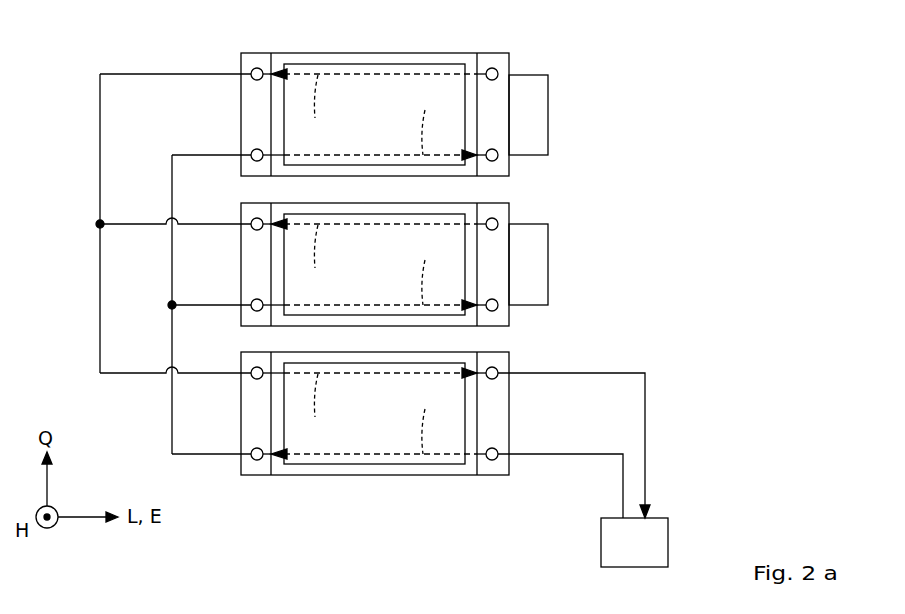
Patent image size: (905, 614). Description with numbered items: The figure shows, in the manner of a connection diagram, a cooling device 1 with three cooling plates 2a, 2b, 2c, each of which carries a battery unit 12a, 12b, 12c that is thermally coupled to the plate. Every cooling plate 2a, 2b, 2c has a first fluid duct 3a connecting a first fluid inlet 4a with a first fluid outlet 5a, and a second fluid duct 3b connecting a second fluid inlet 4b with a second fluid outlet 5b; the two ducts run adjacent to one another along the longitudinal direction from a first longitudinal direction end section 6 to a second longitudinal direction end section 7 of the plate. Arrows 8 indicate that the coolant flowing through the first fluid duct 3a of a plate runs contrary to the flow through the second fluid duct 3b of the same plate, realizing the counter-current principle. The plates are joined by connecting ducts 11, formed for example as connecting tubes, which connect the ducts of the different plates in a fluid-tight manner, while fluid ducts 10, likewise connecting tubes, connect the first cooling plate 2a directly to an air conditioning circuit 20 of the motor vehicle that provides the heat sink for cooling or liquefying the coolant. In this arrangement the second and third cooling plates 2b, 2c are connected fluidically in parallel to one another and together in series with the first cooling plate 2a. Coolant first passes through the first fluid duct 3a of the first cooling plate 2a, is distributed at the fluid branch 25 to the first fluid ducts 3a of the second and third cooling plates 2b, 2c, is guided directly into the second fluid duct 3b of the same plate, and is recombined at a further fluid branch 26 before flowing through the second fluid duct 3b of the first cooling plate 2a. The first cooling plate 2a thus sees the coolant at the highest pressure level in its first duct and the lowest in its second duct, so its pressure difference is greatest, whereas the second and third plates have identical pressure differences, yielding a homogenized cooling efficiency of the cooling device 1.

The cooling device 1 is at (650, 138).
The first cooling plate 2a is at (429, 413).
The second cooling plate 2b is at (428, 264).
The third cooling plate 2c is at (428, 114).
The first fluid duct 3a is at (439, 272).
The second fluid duct 3b is at (324, 259).
The first fluid inlet 4a is at (251, 71).
The second fluid inlet 4b is at (497, 159).
The first fluid outlet 5a is at (497, 71).
The second fluid outlet 5b is at (251, 152).
The first longitudinal direction end section 6 is at (258, 60).
The second longitudinal direction end section 7 is at (491, 60).
The arrows 8 is at (374, 264).
The fluid ducts 10 is at (647, 437).
The connecting ducts 11 is at (100, 113).
The battery unit 12a is at (392, 410).
The battery unit 12b is at (392, 261).
The battery unit 12c is at (392, 111).
The air conditioning circuit 20 is at (645, 551).
The fluid branch 25 is at (169, 304).
The further fluid branch 26 is at (97, 223).